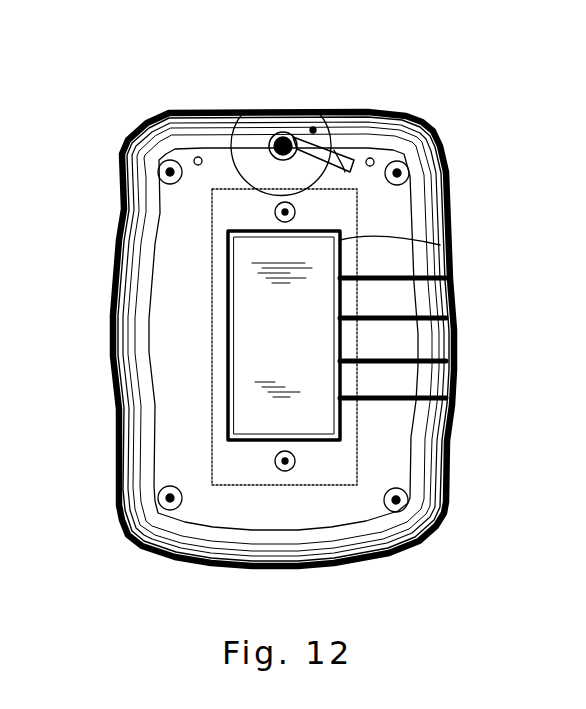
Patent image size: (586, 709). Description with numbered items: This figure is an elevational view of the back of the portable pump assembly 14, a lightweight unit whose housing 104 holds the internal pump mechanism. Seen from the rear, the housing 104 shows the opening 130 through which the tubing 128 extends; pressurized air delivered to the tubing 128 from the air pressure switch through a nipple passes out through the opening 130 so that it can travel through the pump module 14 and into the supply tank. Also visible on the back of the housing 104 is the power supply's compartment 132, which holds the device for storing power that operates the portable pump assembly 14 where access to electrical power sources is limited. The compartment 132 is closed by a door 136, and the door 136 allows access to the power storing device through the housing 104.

The portable pump assembly 14 is at (192, 46).
The housing 104 is at (206, 112).
The tubing 128 is at (338, 140).
The opening 130 is at (285, 133).
The compartment 132 is at (440, 245).
The door 136 is at (248, 314).